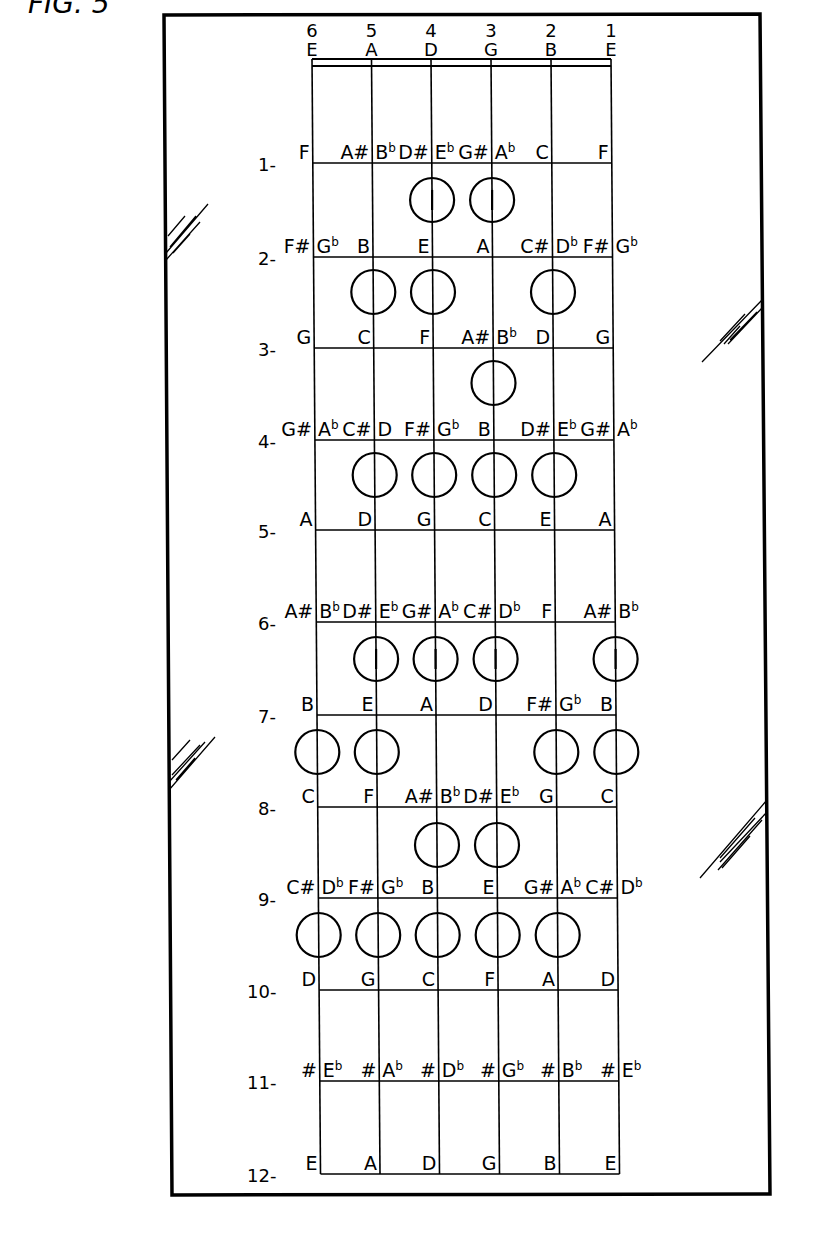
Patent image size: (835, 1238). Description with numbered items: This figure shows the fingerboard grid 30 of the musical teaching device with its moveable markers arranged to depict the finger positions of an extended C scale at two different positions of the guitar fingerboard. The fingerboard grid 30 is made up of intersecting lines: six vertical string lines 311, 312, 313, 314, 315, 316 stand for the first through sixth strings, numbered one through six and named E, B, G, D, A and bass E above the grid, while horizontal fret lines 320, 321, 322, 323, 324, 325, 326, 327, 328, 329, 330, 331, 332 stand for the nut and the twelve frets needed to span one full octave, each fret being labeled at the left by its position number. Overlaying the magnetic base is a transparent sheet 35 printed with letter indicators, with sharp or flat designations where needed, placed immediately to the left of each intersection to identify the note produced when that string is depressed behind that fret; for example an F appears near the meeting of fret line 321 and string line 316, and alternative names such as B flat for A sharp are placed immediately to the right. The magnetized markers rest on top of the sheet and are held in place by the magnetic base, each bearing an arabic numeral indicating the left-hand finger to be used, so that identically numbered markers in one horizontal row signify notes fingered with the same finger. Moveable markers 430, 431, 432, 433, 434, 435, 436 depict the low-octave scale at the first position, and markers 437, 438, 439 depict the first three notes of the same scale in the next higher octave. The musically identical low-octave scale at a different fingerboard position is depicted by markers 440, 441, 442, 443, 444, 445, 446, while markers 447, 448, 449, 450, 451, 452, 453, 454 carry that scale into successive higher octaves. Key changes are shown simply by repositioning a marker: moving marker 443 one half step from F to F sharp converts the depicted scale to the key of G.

The fingerboard grid 30 is at (168, 434).
The transparent sheet 35 is at (168, 492).
The string line 311 is at (614, 85).
The string line 312 is at (554, 85).
The string line 313 is at (494, 85).
The string line 314 is at (434, 85).
The string line 315 is at (374, 85).
The string line 316 is at (314, 85).
The fret line 320 is at (613, 66).
The fret line 321 is at (613, 163).
The fret line 322 is at (614, 257).
The fret line 323 is at (614, 348).
The fret line 324 is at (615, 440).
The fret line 325 is at (616, 530).
The fret line 326 is at (617, 622).
The fret line 327 is at (617, 715).
The fret line 328 is at (618, 807).
The fret line 329 is at (619, 898).
The fret line 330 is at (619, 990).
The fret line 331 is at (620, 1081).
The fret line 332 is at (620, 1174).
The moveable marker 430 is at (358, 308).
The moveable marker 431 is at (359, 491).
The moveable marker 432 is at (417, 216).
The moveable marker 433 is at (418, 308).
The moveable marker 434 is at (419, 491).
The moveable marker 435 is at (477, 216).
The moveable marker 436 is at (474, 386).
The moveable marker 437 is at (479, 491).
The moveable marker 438 is at (569, 308).
The moveable marker 439 is at (539, 491).
The moveable marker 440 is at (297, 760).
The moveable marker 441 is at (298, 942).
The moveable marker 442 is at (361, 675).
The moveable marker 443 is at (362, 768).
The moveable marker 444 is at (363, 951).
The moveable marker 445 is at (420, 675).
The moveable marker 446 is at (448, 864).
The moveable marker 447 is at (423, 951).
The moveable marker 448 is at (480, 675).
The moveable marker 449 is at (518, 852).
The moveable marker 450 is at (483, 951).
The moveable marker 451 is at (572, 768).
The moveable marker 452 is at (543, 951).
The moveable marker 453 is at (638, 661).
The moveable marker 454 is at (638, 754).